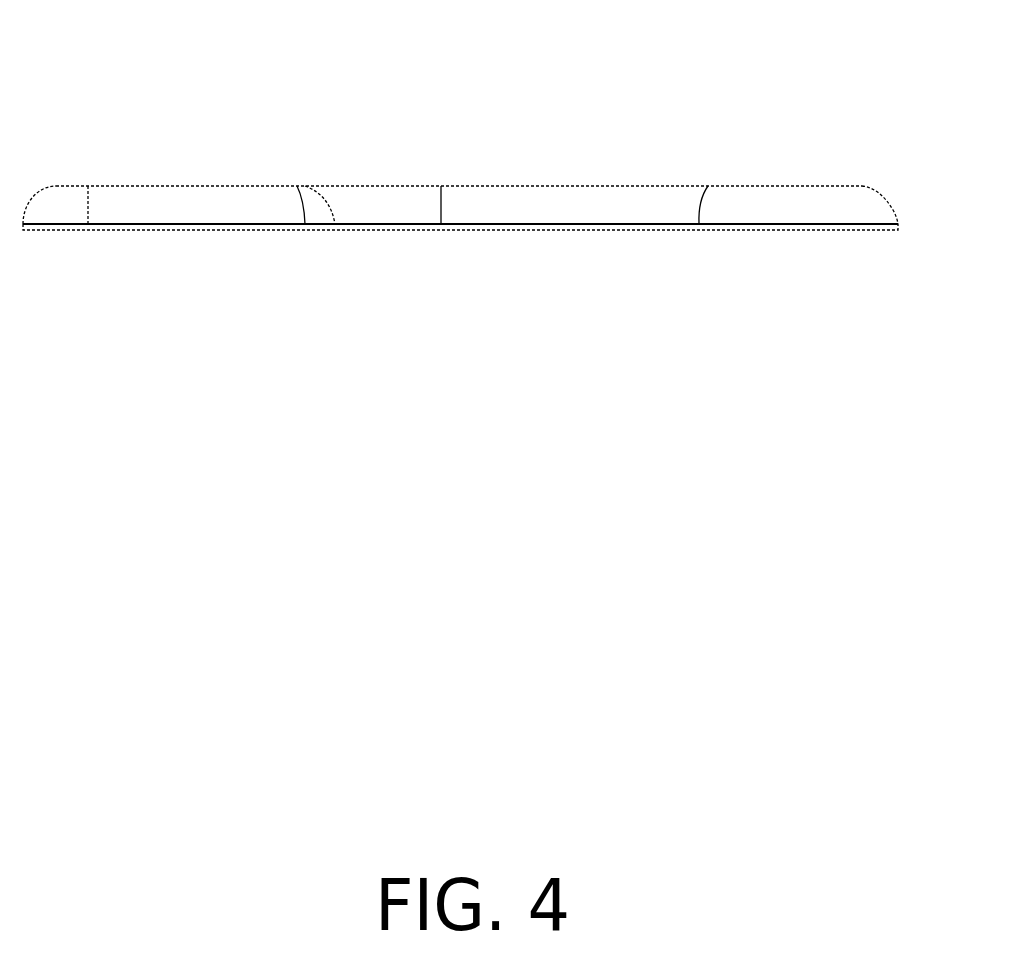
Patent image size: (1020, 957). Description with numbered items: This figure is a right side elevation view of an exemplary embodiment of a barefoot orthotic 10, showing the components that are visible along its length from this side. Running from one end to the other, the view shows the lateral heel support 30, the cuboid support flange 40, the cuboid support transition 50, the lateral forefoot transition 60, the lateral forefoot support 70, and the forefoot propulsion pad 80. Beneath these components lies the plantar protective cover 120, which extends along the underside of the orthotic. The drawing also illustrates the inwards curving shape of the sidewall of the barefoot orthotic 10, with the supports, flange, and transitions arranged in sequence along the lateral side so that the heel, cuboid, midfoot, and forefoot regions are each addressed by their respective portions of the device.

The barefoot orthotic 10 is at (207, 665).
The lateral heel support 30 is at (42, 270).
The cuboid support flange 40 is at (184, 145).
The cuboid support transition 50 is at (301, 145).
The lateral forefoot transition 60 is at (392, 142).
The lateral forefoot support 70 is at (585, 142).
The forefoot propulsion pad 80 is at (771, 144).
The plantar protective cover 120 is at (488, 228).